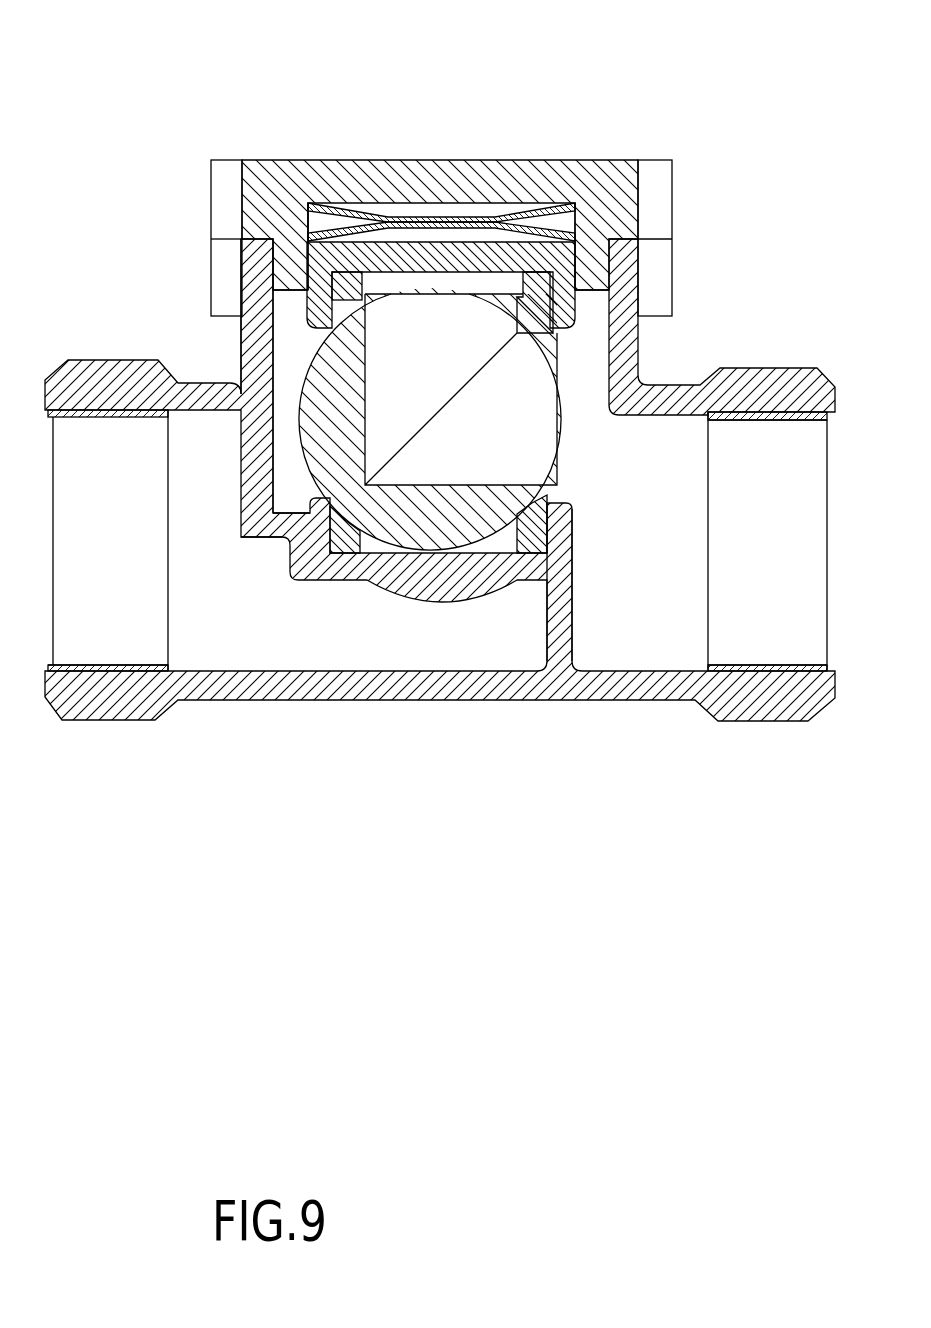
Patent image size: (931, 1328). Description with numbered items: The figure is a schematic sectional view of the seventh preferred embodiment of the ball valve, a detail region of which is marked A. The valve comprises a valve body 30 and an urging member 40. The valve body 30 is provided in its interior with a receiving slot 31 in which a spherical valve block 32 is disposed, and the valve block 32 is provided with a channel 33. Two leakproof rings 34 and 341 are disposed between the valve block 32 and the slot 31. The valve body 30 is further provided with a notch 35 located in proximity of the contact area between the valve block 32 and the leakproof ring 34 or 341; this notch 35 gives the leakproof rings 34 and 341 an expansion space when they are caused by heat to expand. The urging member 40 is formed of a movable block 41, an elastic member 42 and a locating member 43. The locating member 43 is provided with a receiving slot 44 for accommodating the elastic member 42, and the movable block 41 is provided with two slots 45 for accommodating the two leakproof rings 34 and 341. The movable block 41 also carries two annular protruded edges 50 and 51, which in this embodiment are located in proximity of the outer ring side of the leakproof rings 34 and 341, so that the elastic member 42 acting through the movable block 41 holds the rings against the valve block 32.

The valve body 30 is at (350, 703).
The receiving slot 31 is at (243, 362).
The spherical valve block 32 is at (322, 452).
The channel 33 is at (438, 460).
The leakproof ring 34 is at (582, 320).
The leakproof ring 341 is at (555, 520).
The notch 35 is at (348, 535).
The urging member 40 is at (469, 139).
The movable block 41 is at (290, 268).
The elastic member 42 is at (350, 232).
The locating member 43 is at (306, 203).
The receiving slot 44 is at (532, 212).
The slot 45 is at (375, 275).
The annular protruded edge 50 is at (560, 338).
The annular protruded edge 51 is at (565, 495).
The detail A is at (310, 233).